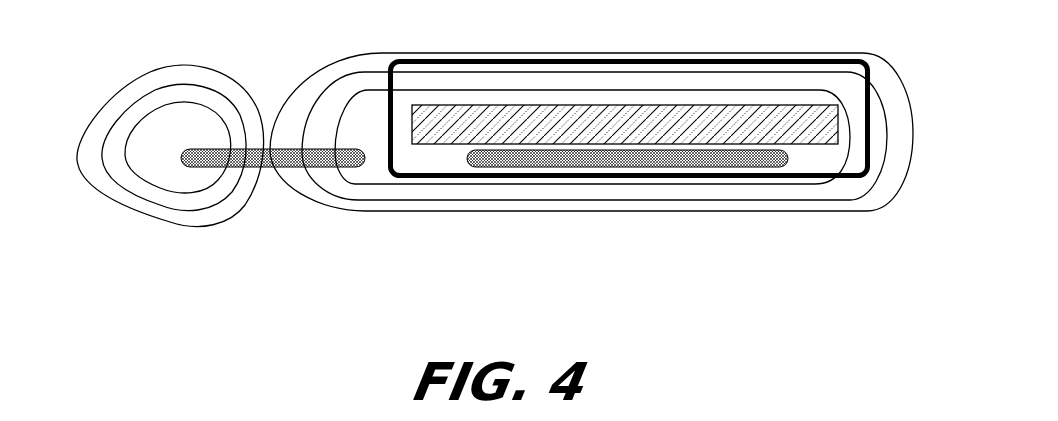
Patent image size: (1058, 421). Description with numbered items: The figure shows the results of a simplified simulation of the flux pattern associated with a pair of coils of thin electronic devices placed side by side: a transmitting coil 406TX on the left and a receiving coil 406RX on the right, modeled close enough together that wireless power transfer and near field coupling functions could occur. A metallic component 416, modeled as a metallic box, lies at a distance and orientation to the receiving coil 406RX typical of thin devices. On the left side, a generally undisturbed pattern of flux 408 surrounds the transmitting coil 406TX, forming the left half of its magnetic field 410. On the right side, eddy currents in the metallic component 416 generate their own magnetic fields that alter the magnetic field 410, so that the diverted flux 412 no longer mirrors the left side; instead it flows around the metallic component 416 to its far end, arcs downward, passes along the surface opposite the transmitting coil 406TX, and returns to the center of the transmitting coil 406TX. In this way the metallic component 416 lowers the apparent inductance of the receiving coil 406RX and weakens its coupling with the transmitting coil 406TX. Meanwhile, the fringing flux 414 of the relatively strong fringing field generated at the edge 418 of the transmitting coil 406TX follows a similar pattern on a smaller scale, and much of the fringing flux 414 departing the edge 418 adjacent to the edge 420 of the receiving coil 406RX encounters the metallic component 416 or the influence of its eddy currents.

The flux 408 is at (167, 56).
The magnetic field 410 is at (200, 141).
The diverted flux 412 is at (703, 44).
The fringing flux 414 is at (352, 92).
The metallic component 416 is at (552, 105).
The edge of the transmitting coil 418 is at (362, 168).
The edge of the receiving coil 420 is at (470, 162).
The transmitting coil 406TX is at (270, 190).
The receiving coil 406RX is at (640, 222).